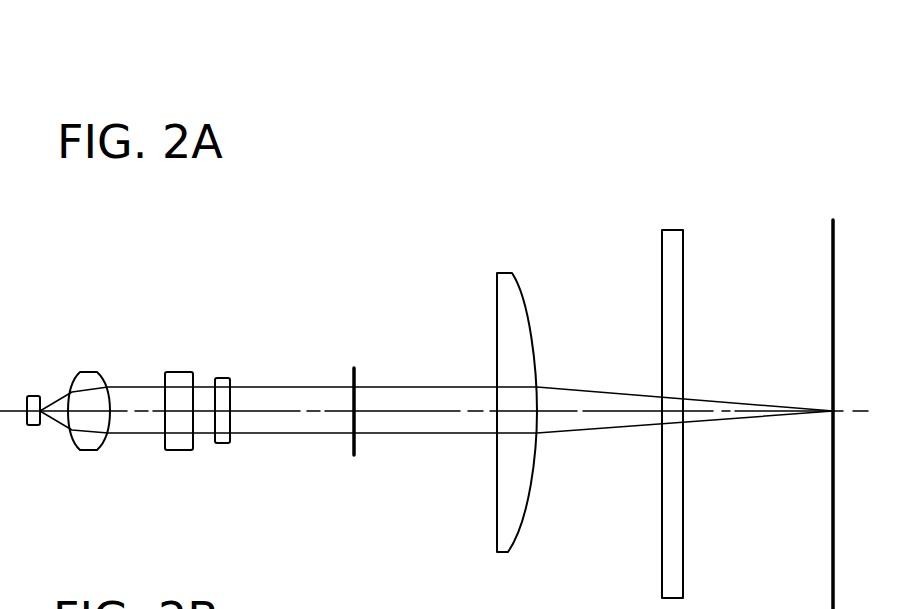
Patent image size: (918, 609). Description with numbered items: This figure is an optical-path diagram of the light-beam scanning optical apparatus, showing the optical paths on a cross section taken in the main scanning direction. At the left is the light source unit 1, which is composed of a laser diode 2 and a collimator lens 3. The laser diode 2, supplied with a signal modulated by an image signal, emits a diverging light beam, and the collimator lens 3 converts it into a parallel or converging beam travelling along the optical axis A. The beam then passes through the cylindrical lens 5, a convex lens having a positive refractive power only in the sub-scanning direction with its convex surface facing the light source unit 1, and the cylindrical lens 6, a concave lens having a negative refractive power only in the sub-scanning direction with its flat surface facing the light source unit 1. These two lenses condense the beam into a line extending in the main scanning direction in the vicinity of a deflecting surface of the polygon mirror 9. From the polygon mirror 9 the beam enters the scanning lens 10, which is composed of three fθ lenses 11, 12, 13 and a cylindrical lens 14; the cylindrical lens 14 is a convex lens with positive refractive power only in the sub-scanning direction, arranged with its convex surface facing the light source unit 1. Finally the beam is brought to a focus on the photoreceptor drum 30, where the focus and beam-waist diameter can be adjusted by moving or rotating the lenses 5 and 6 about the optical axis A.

The light source unit 1 is at (18, 291).
The laser diode 2 is at (28, 396).
The collimator lens 3 is at (87, 372).
The cylindrical lens 5 is at (173, 372).
The cylindrical lens 6 is at (228, 378).
The polygon mirror 9 is at (352, 378).
The optical axis A is at (409, 411).
The scanning lens 10 is at (687, 196).
The fθ lens 11 is at (520, 292).
The fθ lens 12 is at (517, 412).
The fθ lens 13 is at (517, 412).
The cylindrical lens 14 is at (684, 265).
The photoreceptor drum 30 is at (830, 232).